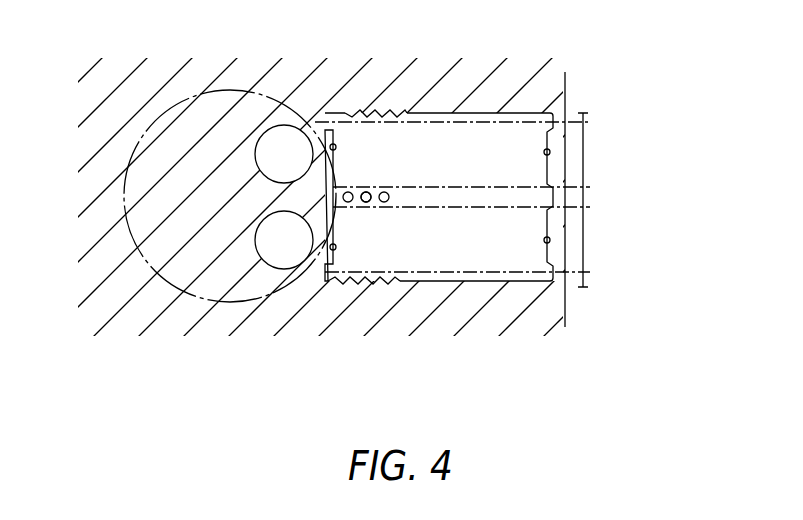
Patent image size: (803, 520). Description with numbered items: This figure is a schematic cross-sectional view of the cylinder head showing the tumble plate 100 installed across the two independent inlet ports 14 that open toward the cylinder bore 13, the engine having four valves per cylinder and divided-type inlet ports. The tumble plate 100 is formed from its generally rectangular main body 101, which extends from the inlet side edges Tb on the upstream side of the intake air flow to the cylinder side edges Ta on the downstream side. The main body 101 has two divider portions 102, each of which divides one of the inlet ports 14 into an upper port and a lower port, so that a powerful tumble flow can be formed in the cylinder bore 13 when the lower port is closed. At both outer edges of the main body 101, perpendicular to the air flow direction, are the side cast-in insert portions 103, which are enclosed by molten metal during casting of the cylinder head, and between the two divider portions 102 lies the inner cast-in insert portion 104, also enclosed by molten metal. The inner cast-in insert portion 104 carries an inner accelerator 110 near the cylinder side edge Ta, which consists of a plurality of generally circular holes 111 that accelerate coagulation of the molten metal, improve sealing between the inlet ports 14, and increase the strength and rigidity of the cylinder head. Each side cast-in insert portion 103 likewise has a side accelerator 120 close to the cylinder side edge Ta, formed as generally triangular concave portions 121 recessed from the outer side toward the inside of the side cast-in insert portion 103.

The cylinder bore 13 is at (220, 304).
The inlet ports 14 is at (314, 124).
The tumble plate 100 is at (472, 112).
The main body 101 is at (527, 112).
The divider portions 102 is at (587, 158).
The side cast-in insert portion 103 is at (588, 113).
The inner cast-in insert portion 104 is at (587, 198).
The inner accelerator 110 is at (399, 192).
The holes 111 is at (372, 203).
The side accelerators 120 is at (389, 111).
The concave portion 121 is at (371, 111).
The cylinder side edges Ta is at (337, 150).
The inlet side edges Tb is at (547, 153).